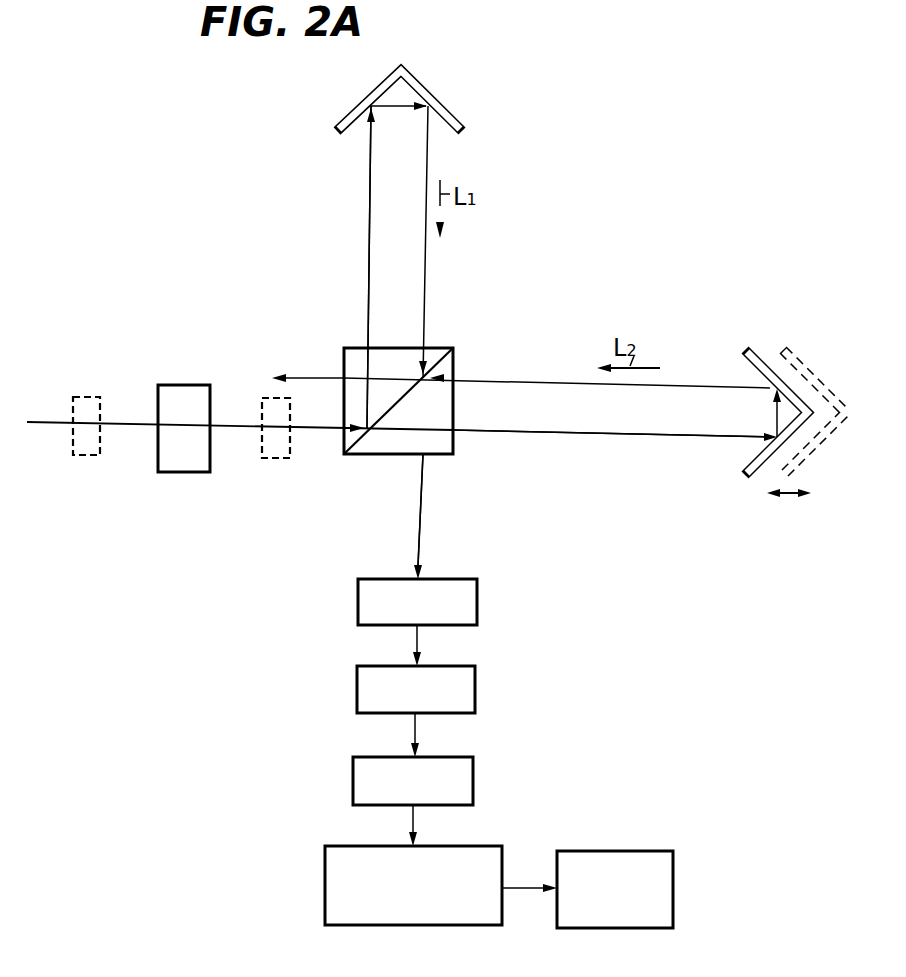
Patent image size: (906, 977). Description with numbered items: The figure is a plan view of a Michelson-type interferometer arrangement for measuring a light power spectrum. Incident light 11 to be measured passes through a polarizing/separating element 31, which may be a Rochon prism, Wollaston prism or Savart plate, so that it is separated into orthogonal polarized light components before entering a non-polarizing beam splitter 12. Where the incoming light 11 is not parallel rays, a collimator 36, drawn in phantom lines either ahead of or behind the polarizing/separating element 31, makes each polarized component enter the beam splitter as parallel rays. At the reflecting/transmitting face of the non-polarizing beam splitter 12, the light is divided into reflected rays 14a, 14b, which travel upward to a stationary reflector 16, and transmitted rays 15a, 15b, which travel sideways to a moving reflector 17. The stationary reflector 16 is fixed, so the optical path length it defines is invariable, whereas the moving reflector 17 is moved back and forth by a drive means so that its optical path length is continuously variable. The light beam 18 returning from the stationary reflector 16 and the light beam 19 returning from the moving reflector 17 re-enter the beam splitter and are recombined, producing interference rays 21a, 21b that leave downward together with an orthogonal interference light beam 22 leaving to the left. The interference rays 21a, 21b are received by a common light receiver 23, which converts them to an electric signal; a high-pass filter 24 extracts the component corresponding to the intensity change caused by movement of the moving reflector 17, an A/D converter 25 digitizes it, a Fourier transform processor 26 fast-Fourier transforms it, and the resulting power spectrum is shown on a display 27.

The incident light 11 is at (41, 428).
The non-polarizing beam splitter 12 is at (344, 354).
The reflected ray 14a is at (368, 232).
The reflected ray 14b is at (368, 232).
The transmitted ray 15a is at (533, 434).
The transmitted ray 15b is at (538, 452).
The stationary reflector 16 is at (456, 58).
The moving reflector 17 is at (758, 476).
The light beam reflected from the stationary reflector 18 is at (426, 290).
The light beam reflected from the moving reflector 19 is at (528, 381).
The interference ray 21a is at (422, 512).
The interference ray 21b is at (452, 512).
The interference light beam 22 is at (302, 376).
The light receiver 23 is at (477, 590).
The high-pass filter 24 is at (475, 677).
The A/D converter 25 is at (473, 770).
The Fourier transform processor 26 is at (325, 862).
The display 27 is at (673, 868).
The polarizing/separating element 31 is at (176, 474).
The collimator 36 is at (87, 396).